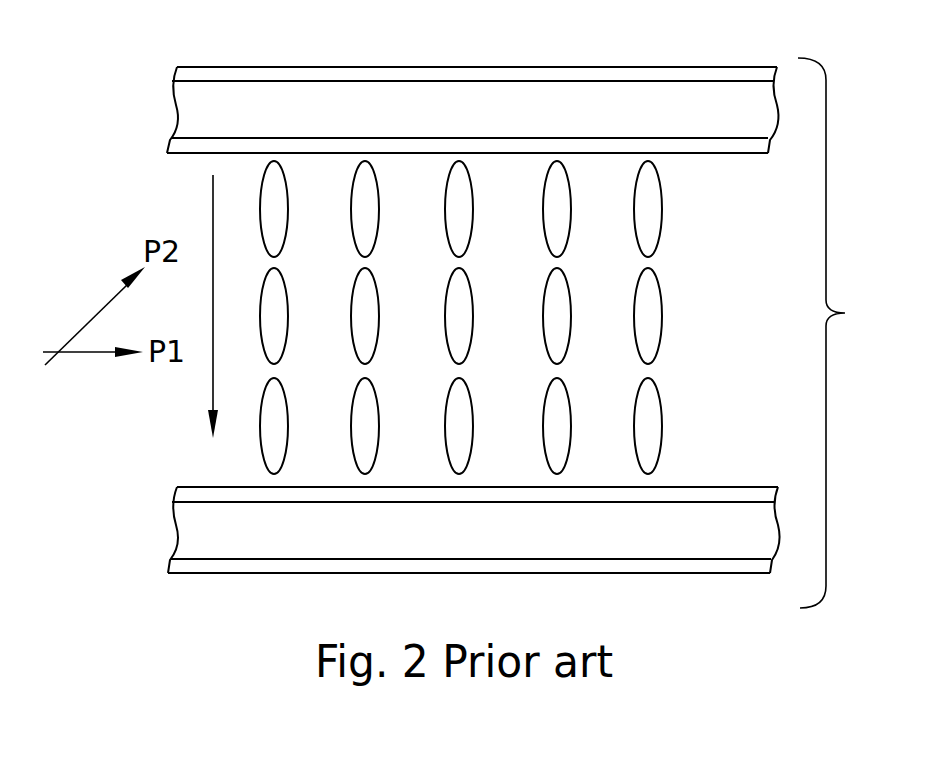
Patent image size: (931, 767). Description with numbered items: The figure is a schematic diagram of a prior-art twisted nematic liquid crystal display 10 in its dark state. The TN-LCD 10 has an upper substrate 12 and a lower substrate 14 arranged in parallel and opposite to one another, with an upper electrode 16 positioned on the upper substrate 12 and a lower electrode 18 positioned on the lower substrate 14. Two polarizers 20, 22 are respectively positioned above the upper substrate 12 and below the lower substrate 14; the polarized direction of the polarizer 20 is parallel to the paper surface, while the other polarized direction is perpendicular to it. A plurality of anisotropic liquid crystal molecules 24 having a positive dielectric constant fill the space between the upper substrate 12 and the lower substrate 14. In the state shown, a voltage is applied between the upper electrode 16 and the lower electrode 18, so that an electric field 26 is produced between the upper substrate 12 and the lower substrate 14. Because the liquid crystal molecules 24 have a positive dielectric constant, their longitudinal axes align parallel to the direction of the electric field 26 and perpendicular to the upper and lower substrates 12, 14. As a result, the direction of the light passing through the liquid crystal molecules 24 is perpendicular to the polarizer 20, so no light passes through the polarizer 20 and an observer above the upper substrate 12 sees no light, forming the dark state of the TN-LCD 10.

The twisted nematic liquid crystal display 10 is at (843, 333).
The upper substrate 12 is at (458, 125).
The lower substrate 14 is at (492, 545).
The upper electrode 16 is at (750, 143).
The lower electrode 18 is at (733, 493).
The polarizer 20 is at (740, 73).
The polarizer 22 is at (750, 563).
The liquid crystal molecules 24 is at (650, 192).
The electric field 26 is at (219, 327).